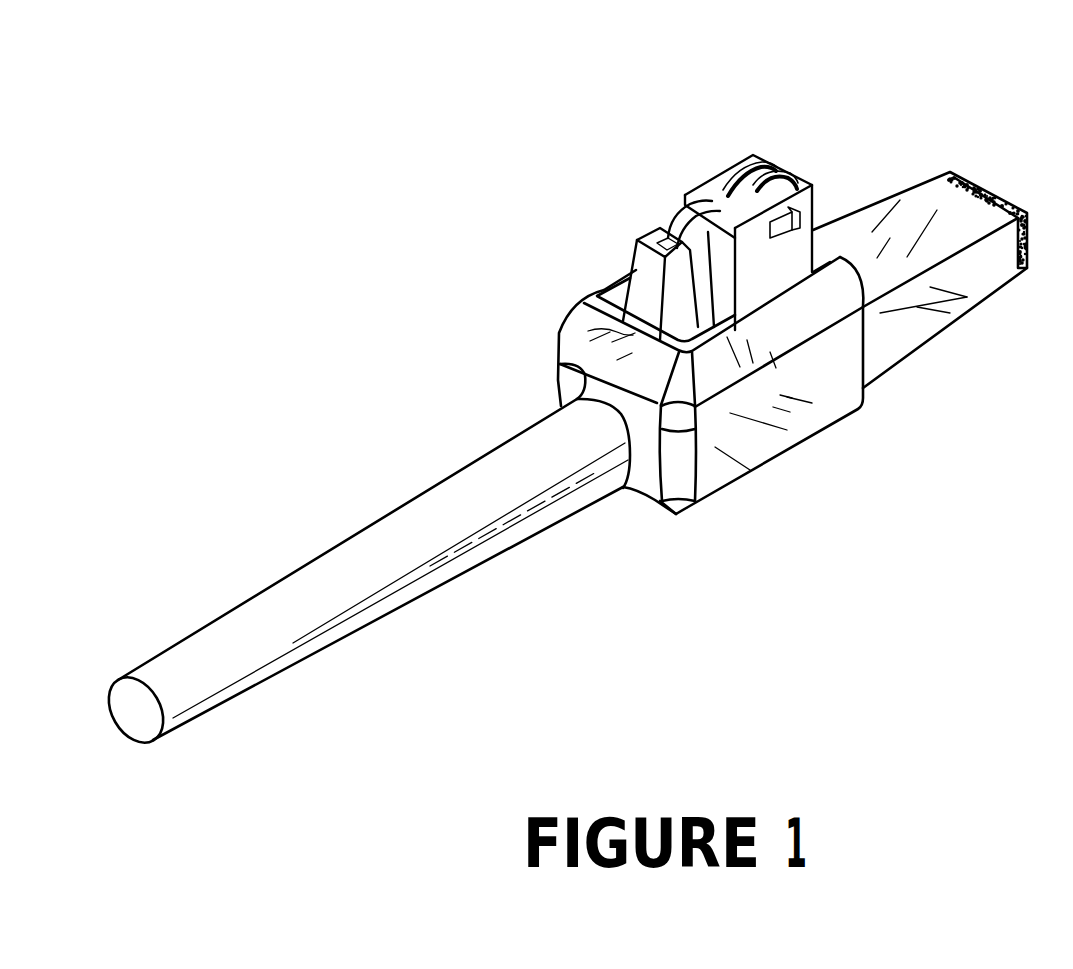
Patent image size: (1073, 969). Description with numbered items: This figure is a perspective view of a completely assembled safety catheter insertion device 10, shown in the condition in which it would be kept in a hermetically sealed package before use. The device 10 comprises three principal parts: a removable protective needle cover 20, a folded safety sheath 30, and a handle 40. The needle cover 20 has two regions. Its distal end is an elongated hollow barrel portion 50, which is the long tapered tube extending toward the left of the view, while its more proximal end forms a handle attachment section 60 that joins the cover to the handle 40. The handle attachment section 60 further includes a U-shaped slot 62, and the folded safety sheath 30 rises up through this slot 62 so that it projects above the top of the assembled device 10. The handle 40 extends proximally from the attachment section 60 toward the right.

The catheter insertion device 10 is at (438, 258).
The removable protective needle cover 20 is at (355, 520).
The folded safety sheath 30 is at (700, 148).
The handle 40 is at (962, 165).
The elongated hollow barrel portion 50 is at (498, 458).
The handle attachment section 60 is at (608, 208).
The U-shaped slot 62 is at (843, 453).